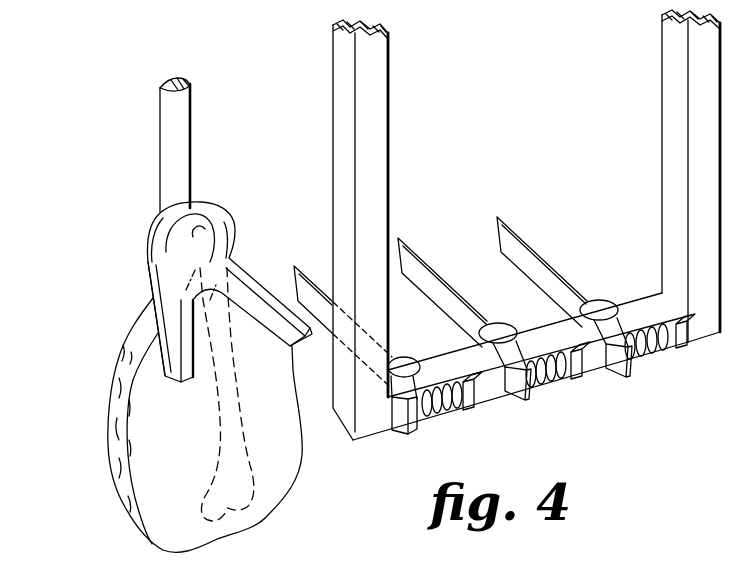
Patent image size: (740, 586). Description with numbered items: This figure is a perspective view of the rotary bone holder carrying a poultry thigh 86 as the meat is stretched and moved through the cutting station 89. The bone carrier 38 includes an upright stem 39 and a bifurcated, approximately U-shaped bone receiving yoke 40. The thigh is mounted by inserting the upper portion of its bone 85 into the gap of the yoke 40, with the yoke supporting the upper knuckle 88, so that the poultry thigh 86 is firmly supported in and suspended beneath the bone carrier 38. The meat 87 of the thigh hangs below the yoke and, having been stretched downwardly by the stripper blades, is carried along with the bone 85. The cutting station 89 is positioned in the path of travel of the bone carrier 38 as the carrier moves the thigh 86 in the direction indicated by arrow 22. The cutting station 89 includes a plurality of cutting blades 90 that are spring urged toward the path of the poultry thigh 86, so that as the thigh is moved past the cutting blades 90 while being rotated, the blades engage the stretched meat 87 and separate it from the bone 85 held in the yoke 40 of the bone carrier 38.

The arrow 22 is at (128, 278).
The bone carrier 38 is at (151, 151).
The upright stem 39 is at (177, 156).
The bone receiving yoke 40 is at (172, 334).
The bone 85 is at (240, 444).
The poultry thigh 86 is at (103, 488).
The meat 87 is at (153, 503).
The upper knuckle 88 is at (200, 233).
The cutting station 89 is at (473, 176).
The cutting blades 90 is at (296, 265).